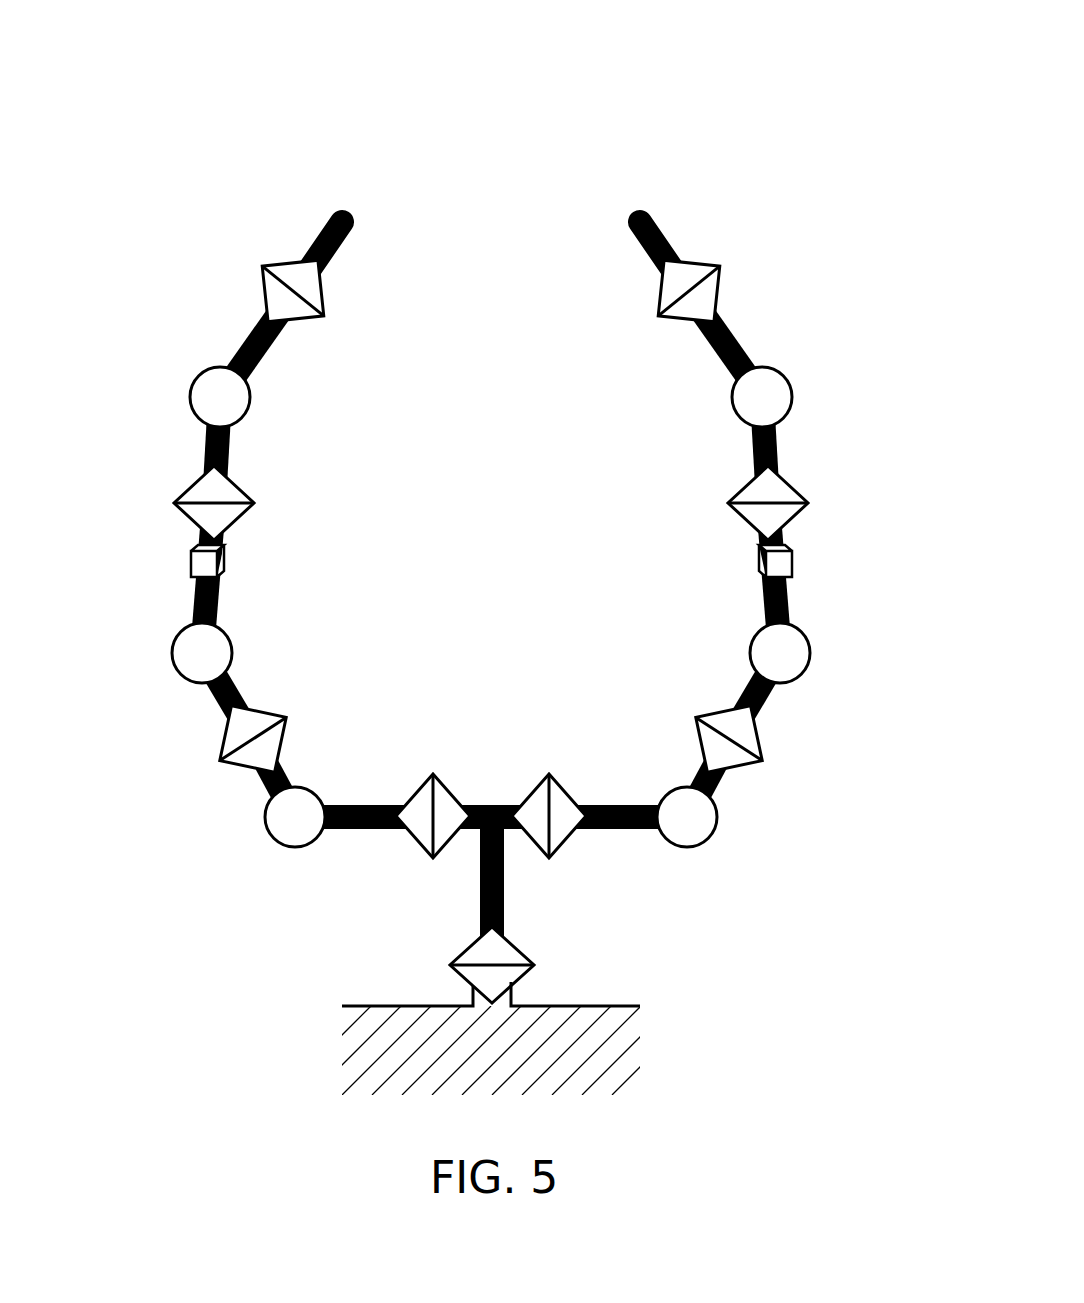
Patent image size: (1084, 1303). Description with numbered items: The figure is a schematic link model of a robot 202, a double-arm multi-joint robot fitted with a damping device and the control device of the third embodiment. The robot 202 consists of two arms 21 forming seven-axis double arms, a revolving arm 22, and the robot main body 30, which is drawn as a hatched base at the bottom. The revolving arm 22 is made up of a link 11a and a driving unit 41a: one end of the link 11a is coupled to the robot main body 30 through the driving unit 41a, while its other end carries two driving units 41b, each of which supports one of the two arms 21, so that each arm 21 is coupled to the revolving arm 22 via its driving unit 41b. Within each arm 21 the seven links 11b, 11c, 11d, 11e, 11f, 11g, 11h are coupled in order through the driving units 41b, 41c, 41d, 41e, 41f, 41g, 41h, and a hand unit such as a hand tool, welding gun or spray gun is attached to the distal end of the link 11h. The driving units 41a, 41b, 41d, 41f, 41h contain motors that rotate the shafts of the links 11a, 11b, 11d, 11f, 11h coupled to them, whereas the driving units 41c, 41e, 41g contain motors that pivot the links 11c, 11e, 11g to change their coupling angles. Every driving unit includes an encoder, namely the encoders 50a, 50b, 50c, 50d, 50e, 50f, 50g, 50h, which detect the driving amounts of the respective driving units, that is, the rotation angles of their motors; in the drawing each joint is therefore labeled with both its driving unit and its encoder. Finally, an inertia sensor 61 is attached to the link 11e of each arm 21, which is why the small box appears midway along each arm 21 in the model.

The robot 202 is at (741, 55).
The arm 21 is at (181, 172).
The revolving arm 22 is at (688, 922).
The robot main body 30 is at (380, 1018).
The link 11a is at (503, 862).
The link 11b is at (608, 829).
The link 11c is at (723, 787).
The link 11d is at (772, 690).
The link 11e is at (788, 602).
The link 11f is at (790, 450).
The link 11g is at (743, 342).
The link 11h is at (662, 240).
The driving unit 41a is at (571, 965).
The driving unit 41b is at (491, 790).
The driving unit 41c is at (491, 779).
The driving unit 41d is at (491, 712).
The driving unit 41e is at (491, 638).
The driving unit 41f is at (491, 503).
The driving unit 41g is at (491, 397).
The driving unit 41h is at (491, 291).
The encoder 50a is at (510, 970).
The encoder 50b is at (537, 803).
The encoder 50c is at (682, 805).
The encoder 50d is at (730, 712).
The encoder 50e is at (767, 653).
The encoder 50f is at (757, 517).
The encoder 50g is at (747, 403).
The encoder 50h is at (670, 287).
The inertia sensor 61 is at (758, 565).